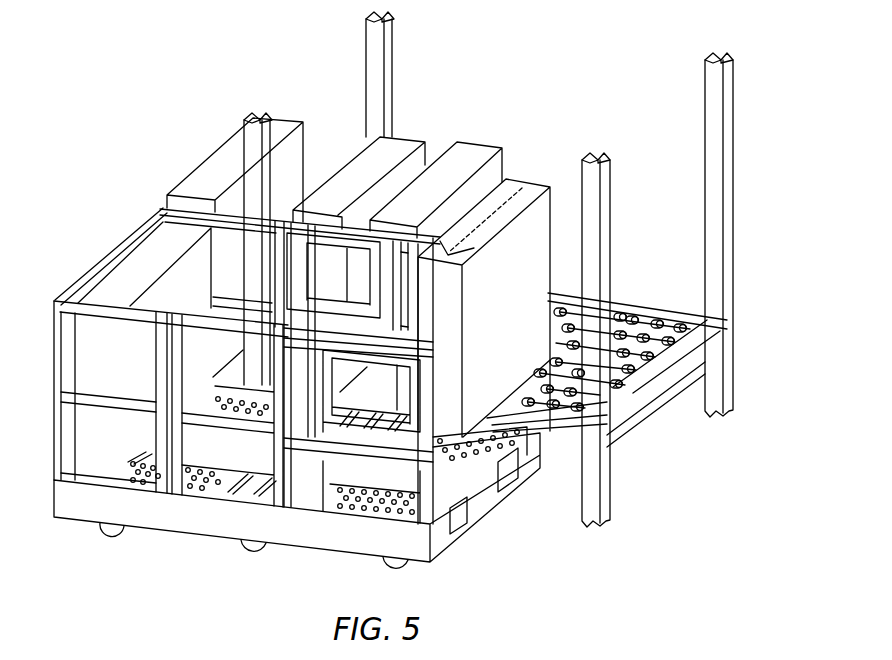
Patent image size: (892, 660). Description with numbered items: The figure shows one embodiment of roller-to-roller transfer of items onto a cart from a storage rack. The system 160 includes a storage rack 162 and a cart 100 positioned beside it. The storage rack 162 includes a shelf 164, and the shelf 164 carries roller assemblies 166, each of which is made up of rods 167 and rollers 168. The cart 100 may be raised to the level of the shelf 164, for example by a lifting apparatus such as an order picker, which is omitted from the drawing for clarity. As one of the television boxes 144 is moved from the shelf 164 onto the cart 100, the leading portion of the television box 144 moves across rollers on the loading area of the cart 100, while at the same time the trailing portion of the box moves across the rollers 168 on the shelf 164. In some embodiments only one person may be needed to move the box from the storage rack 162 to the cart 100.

The cart 100 is at (97, 251).
The television box 144 is at (526, 308).
The system 160 is at (210, 84).
The storage rack 162 is at (659, 393).
The shelf 164 is at (603, 330).
The roller assemblies 166 is at (688, 307).
The rods 167 is at (621, 316).
The rollers 168 is at (658, 321).